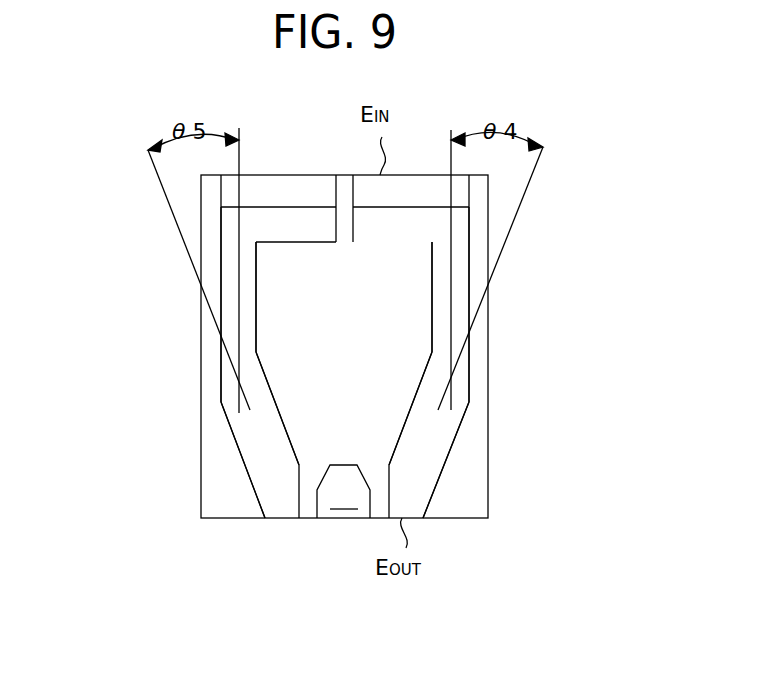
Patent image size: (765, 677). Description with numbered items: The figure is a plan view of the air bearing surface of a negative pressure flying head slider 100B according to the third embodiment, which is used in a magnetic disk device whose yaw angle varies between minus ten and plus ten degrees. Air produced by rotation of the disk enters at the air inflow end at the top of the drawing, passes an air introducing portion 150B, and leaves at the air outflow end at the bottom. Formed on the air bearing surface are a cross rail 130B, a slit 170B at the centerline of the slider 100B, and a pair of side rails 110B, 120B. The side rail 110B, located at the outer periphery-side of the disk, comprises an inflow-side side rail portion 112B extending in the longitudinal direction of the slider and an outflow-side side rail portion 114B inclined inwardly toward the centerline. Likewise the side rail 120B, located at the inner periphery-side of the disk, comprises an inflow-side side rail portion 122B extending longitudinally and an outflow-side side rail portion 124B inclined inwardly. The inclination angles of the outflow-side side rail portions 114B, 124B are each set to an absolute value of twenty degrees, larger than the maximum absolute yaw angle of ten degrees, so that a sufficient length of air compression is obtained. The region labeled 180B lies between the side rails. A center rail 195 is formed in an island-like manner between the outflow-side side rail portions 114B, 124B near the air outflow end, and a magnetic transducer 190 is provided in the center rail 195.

The slider 100B is at (497, 482).
The air introducing portion 150B is at (277, 188).
The slit 170B is at (343, 226).
The cross rail 130B is at (295, 230).
The side rail 120B is at (227, 373).
The inflow-side side rail portion 122B is at (226, 318).
The outflow-side side rail portion 124B is at (240, 437).
The side rail 110B is at (460, 372).
The inflow-side side rail portion 112B is at (440, 287).
The outflow-side side rail portion 114B is at (427, 450).
The substrate region 180B is at (381, 369).
The center rail 195 is at (345, 480).
The magnetic transducer 190 is at (345, 509).